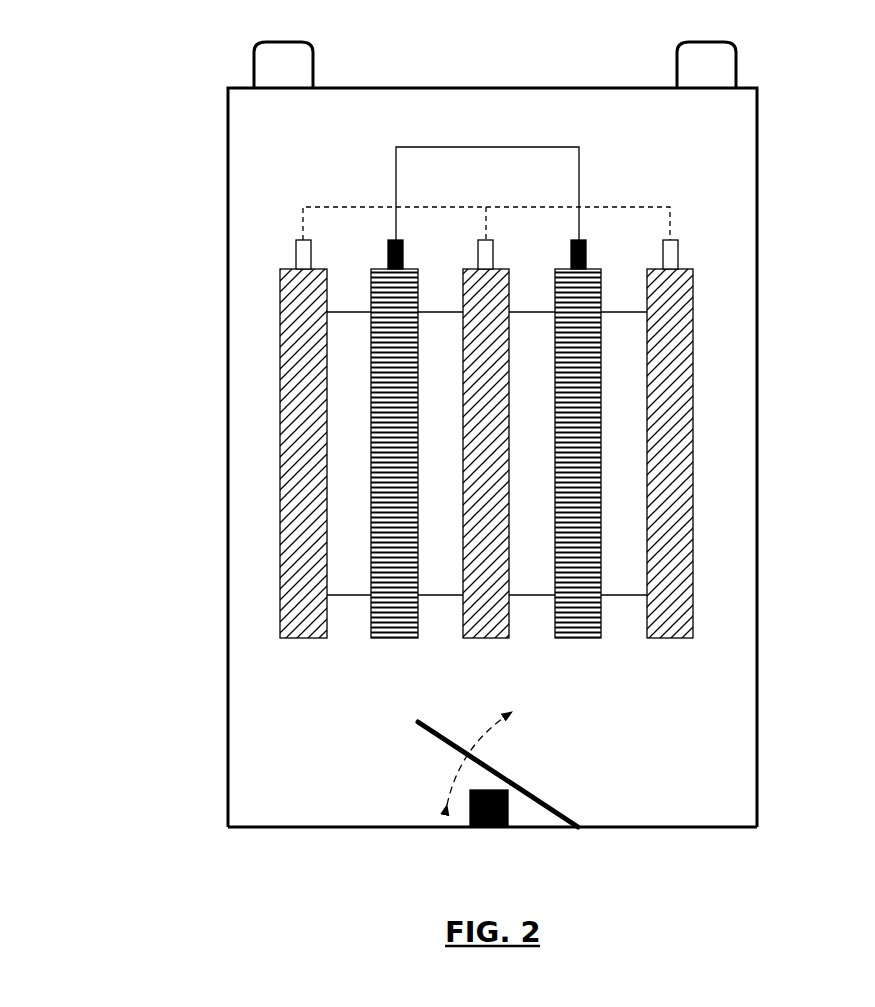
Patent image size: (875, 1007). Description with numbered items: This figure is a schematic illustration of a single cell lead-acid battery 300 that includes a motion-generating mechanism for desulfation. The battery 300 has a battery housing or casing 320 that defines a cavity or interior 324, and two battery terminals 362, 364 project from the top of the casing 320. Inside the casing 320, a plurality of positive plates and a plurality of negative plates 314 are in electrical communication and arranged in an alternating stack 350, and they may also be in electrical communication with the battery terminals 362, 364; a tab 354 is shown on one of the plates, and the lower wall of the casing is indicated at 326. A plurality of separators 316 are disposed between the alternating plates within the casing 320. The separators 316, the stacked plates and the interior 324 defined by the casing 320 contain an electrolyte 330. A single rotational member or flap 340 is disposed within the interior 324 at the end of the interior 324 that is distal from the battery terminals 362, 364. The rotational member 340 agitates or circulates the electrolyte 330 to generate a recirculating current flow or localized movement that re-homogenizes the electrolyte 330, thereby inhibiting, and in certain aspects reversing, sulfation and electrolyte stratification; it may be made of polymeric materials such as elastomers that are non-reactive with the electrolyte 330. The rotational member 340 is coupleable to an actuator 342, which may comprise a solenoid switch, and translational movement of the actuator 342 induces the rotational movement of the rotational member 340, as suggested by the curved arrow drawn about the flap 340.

The lead-acid battery 300 is at (174, 62).
The battery casing 320 is at (757, 460).
The interior 324 is at (270, 184).
The housing bottom wall 326 is at (655, 828).
The electrolyte 330 is at (341, 131).
The battery terminal 362 is at (313, 48).
The battery terminal 364 is at (736, 48).
The alternating stack 350 is at (425, 418).
The negative plate 314 is at (636, 419).
The electrode tab 354 is at (585, 253).
The separator 316 is at (350, 596).
The rotational member 340 is at (438, 738).
The actuator 342 is at (488, 827).